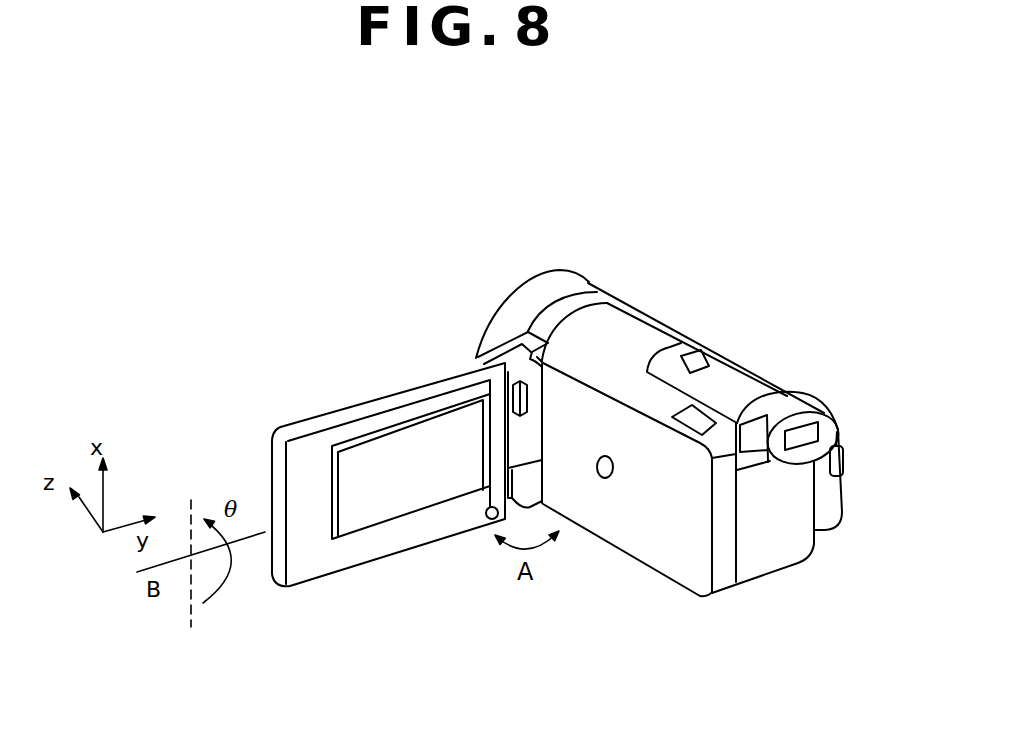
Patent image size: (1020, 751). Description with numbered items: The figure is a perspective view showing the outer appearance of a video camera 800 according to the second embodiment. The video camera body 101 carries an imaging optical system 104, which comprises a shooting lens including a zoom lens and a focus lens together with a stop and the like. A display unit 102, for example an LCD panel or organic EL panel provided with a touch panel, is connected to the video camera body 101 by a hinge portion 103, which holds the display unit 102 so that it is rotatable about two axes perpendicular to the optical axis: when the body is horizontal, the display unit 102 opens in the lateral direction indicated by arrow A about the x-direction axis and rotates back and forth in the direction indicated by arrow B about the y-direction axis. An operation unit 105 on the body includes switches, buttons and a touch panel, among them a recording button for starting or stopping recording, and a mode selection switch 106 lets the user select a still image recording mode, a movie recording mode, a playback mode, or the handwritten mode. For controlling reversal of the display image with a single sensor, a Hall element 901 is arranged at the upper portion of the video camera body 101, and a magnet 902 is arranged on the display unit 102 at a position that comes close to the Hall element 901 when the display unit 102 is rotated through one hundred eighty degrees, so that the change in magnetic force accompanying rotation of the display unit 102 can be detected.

The video camera 800 is at (640, 268).
The video camera body 101 is at (687, 575).
The display unit 102 is at (380, 407).
The hinge portion 103 is at (533, 430).
The imaging optical system 104 is at (532, 288).
The operation unit 105 is at (846, 447).
The mode selection switch 106 is at (605, 480).
The Hall element 901 is at (483, 355).
The magnet 902 is at (488, 522).